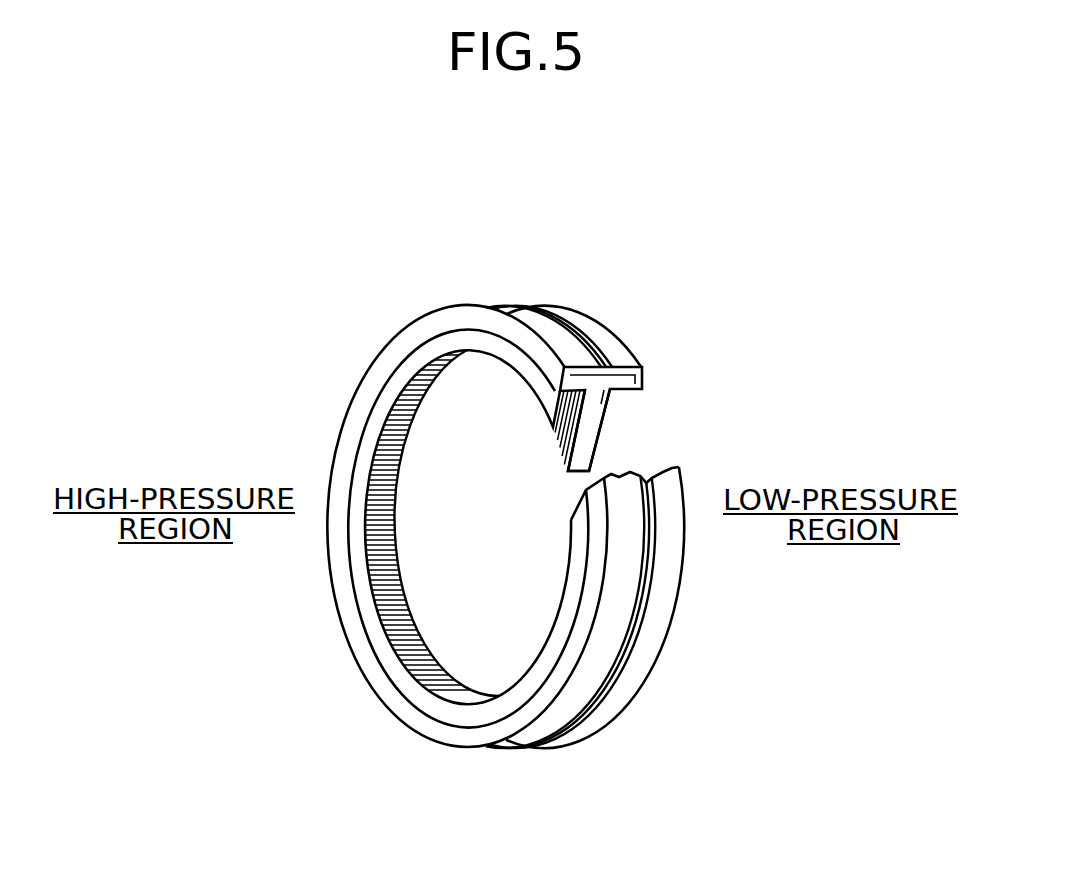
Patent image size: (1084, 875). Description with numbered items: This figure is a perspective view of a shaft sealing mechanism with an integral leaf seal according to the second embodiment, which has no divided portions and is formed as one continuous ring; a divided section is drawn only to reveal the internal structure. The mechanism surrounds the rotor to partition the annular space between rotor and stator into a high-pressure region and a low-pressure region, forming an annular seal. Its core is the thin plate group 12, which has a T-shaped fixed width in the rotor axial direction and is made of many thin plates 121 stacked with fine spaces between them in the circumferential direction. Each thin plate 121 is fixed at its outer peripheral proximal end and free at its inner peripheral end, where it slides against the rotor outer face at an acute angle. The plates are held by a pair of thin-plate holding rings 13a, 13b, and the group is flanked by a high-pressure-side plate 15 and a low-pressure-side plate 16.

The thin plate group 12 is at (553, 429).
The thin plate 121 is at (592, 402).
The thin-plate holding ring 13a is at (523, 304).
The thin-plate holding ring 13b is at (568, 308).
The high-pressure-side plate 15 is at (528, 372).
The low-pressure-side plate 16 is at (644, 376).